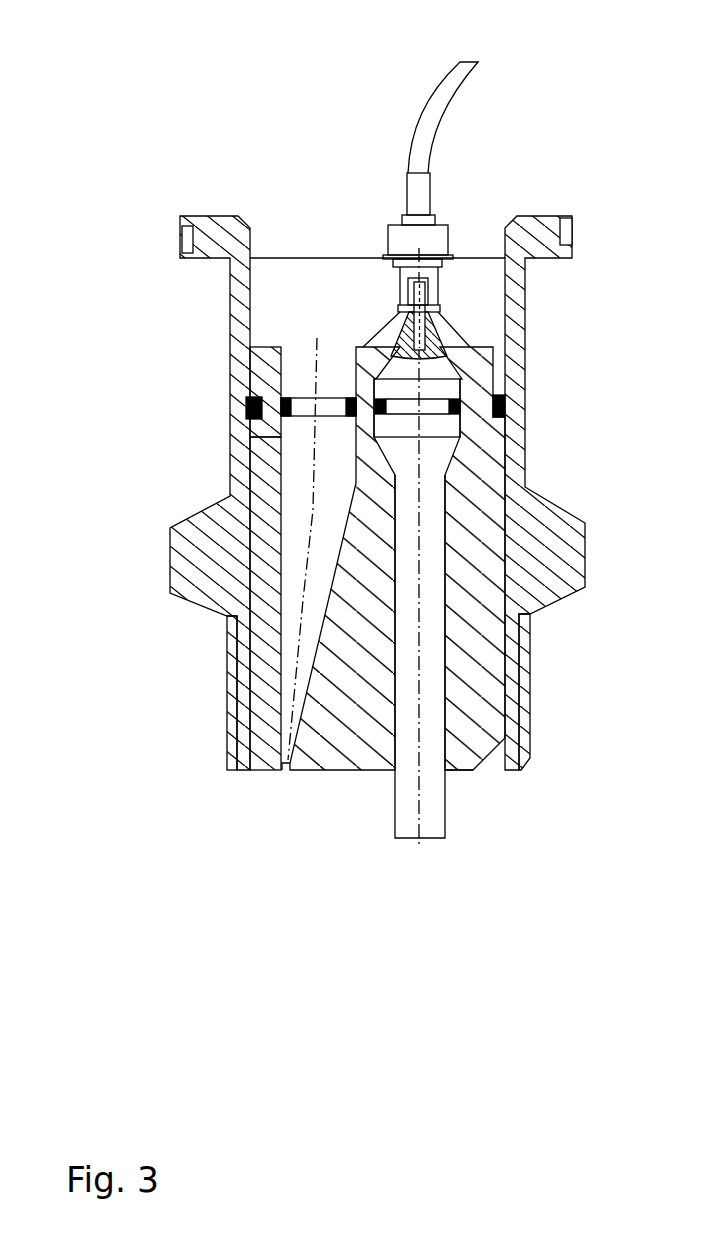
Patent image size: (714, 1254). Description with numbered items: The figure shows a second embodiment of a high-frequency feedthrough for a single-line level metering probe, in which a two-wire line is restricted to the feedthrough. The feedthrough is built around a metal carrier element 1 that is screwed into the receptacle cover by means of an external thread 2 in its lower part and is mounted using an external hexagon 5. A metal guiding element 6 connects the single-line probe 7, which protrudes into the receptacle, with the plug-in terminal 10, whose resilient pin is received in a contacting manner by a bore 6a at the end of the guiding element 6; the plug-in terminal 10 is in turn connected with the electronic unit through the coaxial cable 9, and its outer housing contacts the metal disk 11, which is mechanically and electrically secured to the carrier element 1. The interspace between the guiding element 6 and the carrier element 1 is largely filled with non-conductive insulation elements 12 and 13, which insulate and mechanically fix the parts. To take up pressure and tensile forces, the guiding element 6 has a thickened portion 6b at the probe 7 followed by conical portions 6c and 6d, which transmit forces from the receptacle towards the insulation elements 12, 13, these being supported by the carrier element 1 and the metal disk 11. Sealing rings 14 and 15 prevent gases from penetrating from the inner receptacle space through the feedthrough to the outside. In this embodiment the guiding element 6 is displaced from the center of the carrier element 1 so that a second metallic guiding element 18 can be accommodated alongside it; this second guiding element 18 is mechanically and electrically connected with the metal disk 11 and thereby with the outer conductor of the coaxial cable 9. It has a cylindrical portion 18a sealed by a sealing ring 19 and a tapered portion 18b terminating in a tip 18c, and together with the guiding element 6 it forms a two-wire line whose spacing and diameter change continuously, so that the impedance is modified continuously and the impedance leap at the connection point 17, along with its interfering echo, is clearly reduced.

The carrier element 1 is at (240, 438).
The external thread 2 is at (233, 722).
The external hexagon 5 is at (170, 563).
The guiding element 6 is at (433, 708).
The bore 6a is at (442, 335).
The thickened portion 6b is at (462, 381).
The conical portion 6c is at (472, 461).
The conical portion 6d is at (455, 347).
The single-line probe 7 is at (433, 820).
The coaxial cable 9 is at (433, 85).
The plug-in terminal 10 is at (388, 230).
The metal disk 11 is at (272, 283).
The insulation element 12 is at (268, 378).
The insulation element 13 is at (258, 648).
The sealing ring 14 is at (506, 405).
The sealing ring 15 is at (462, 410).
The connection point 17 is at (447, 773).
The second guiding element 18 is at (280, 514).
The cylindrical portion 18a is at (300, 456).
The tapered portion 18b is at (290, 596).
The tip 18c is at (262, 772).
The sealing ring 19 is at (250, 394).